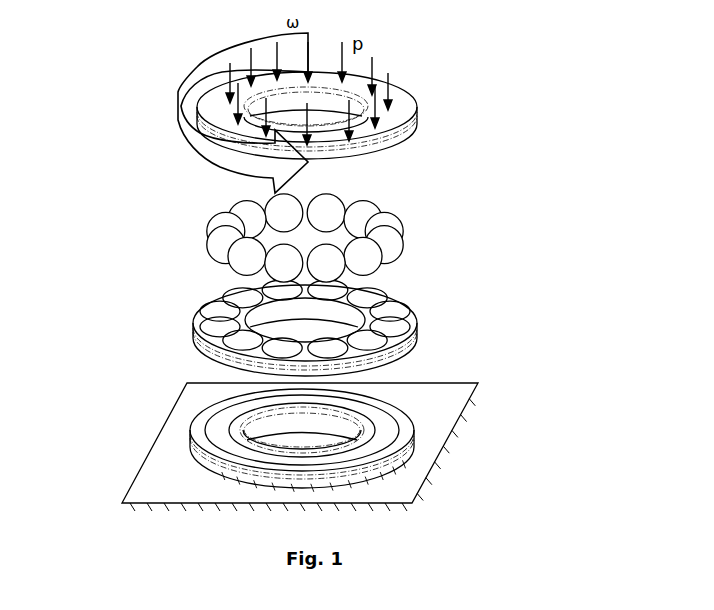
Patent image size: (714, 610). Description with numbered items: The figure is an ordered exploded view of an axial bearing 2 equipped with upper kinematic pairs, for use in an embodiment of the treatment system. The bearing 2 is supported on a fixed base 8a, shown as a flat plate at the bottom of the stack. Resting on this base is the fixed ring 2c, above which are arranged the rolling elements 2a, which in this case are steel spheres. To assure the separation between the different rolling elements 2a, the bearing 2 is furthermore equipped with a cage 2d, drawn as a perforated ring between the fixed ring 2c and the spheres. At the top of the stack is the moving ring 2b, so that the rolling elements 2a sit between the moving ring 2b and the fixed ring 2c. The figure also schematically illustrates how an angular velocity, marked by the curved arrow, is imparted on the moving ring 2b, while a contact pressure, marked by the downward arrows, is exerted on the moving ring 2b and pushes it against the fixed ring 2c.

The axial bearing 2 is at (313, 260).
The rolling elements 2a is at (385, 250).
The moving ring 2b is at (413, 117).
The fixed ring 2c is at (415, 425).
The cage 2d is at (415, 327).
The fixed base 8a is at (403, 485).